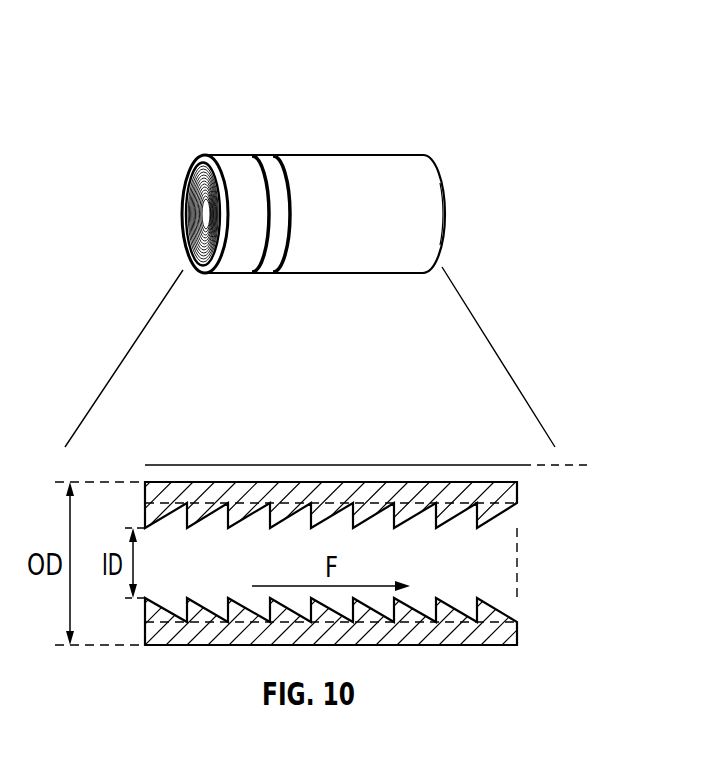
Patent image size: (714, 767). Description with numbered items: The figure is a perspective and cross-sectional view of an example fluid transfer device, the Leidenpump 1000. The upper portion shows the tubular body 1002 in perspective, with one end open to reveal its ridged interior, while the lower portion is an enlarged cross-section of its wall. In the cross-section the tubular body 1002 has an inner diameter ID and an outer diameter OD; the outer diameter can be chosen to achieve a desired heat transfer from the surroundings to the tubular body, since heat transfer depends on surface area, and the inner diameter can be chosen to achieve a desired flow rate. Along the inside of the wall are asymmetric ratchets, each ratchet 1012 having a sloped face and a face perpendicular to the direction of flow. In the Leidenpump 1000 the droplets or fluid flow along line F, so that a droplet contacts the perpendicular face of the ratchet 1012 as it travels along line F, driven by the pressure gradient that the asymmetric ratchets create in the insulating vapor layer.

The Leidenpump 1000 is at (188, 118).
The tubular body 1002 is at (370, 154).
The ratchet 1012 is at (495, 515).